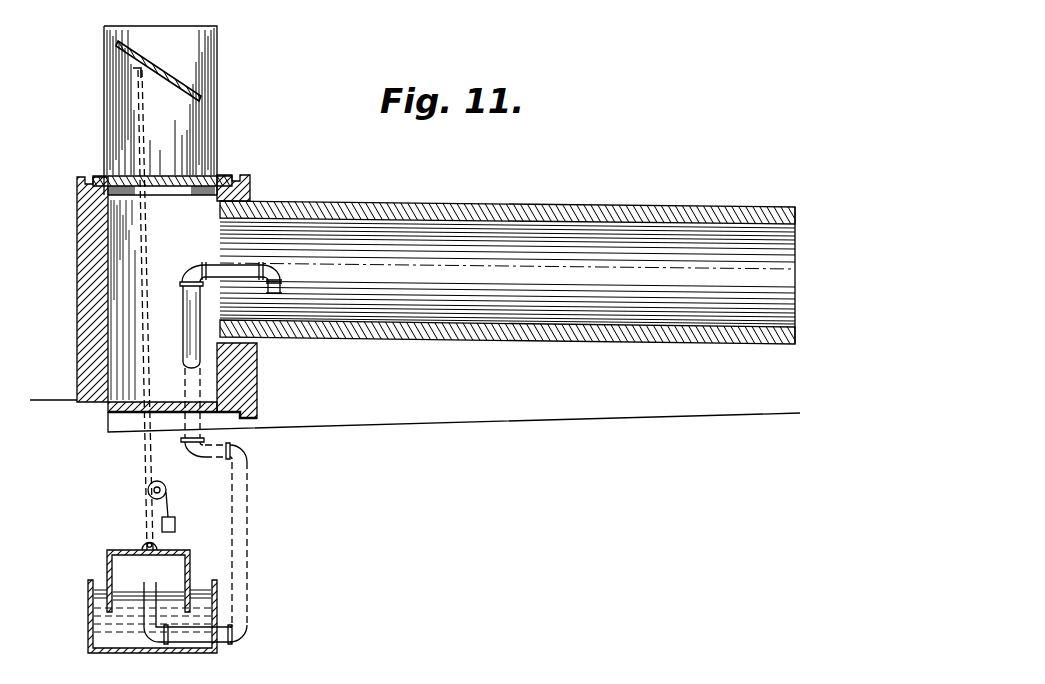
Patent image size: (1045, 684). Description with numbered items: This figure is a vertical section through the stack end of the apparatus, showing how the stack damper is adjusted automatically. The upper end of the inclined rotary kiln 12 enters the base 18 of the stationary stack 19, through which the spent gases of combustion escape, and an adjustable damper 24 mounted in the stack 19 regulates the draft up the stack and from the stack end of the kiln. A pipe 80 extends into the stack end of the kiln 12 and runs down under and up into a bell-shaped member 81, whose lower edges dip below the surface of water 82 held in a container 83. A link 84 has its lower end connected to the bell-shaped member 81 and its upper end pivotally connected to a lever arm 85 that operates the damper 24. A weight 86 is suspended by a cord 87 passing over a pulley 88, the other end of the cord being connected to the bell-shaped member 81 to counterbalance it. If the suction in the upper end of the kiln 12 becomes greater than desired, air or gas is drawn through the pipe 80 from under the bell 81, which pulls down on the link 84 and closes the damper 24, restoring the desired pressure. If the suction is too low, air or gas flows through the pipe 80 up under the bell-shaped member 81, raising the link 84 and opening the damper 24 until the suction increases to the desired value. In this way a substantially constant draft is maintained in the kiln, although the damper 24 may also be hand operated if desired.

The rotary kiln 12 is at (447, 208).
The base of the stack 18 is at (76, 289).
The stack 19 is at (218, 77).
The damper 24 is at (141, 56).
The pipe 80 is at (207, 260).
The bell-shaped member 81 is at (114, 552).
The water 82 is at (198, 598).
The container 83 is at (90, 624).
The link 84 is at (150, 237).
The lever arm 85 is at (149, 80).
The weight 86 is at (177, 522).
The cord 87 is at (171, 503).
The pulley 88 is at (161, 483).